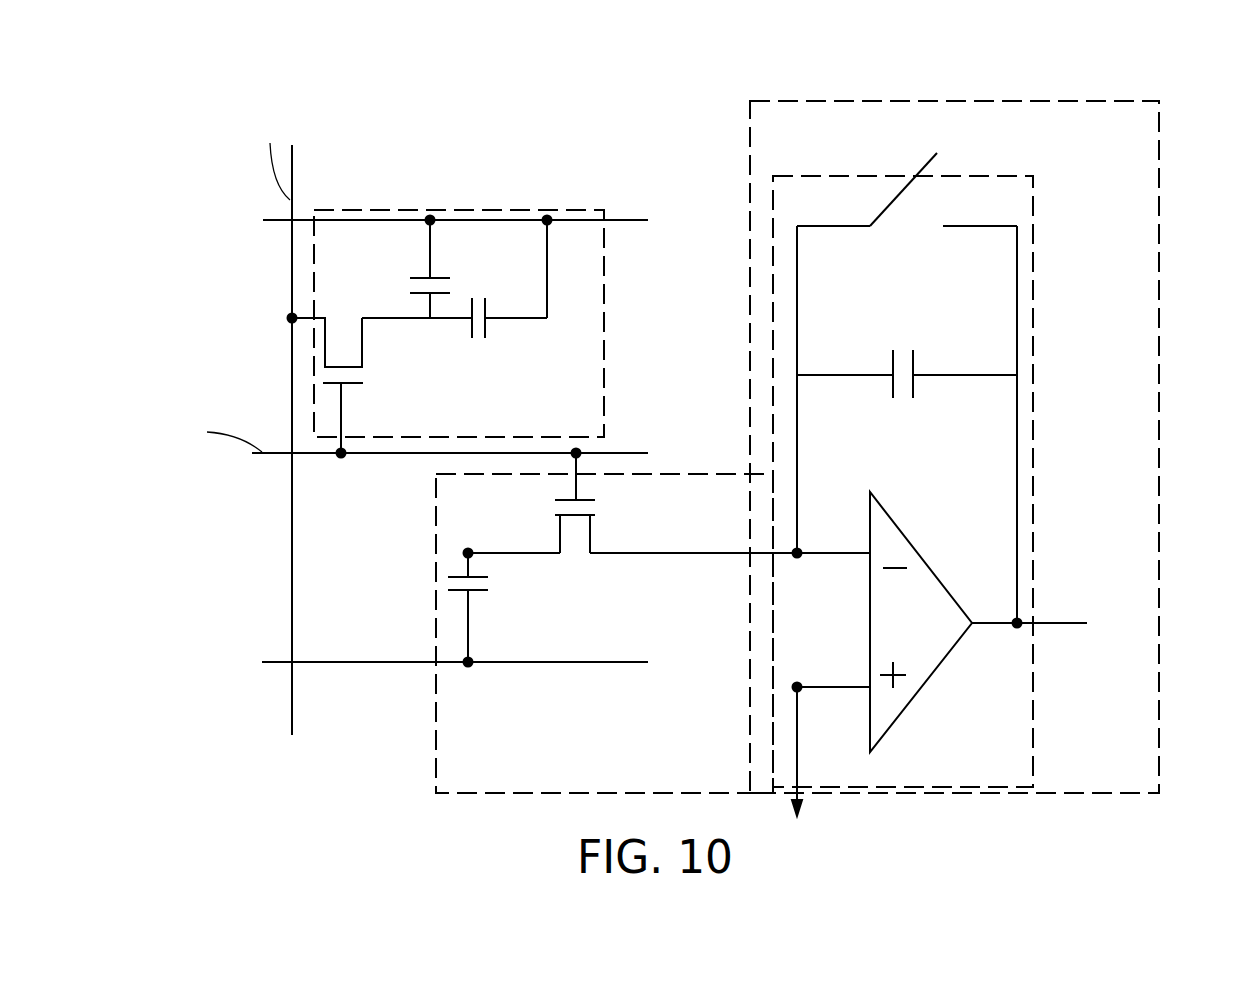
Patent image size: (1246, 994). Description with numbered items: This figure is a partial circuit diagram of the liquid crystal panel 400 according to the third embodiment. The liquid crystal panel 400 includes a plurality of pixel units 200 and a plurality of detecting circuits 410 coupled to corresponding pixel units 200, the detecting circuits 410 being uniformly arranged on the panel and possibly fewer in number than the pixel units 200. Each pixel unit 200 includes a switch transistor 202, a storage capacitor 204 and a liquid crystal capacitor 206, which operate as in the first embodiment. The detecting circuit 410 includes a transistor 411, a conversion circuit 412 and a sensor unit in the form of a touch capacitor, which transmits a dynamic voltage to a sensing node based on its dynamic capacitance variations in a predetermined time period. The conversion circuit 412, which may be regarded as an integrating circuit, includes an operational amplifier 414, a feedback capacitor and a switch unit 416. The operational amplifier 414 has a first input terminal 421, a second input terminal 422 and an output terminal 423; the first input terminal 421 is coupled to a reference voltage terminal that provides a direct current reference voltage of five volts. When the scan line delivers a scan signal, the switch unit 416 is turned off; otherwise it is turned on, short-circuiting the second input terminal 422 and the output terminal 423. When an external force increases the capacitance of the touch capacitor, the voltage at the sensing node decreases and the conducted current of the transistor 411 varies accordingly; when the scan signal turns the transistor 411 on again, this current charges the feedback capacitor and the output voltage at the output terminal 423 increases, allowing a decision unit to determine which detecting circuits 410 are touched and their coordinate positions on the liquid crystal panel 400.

The liquid crystal panel 400 is at (567, 107).
The pixel unit 200 is at (604, 325).
The switch transistor 202 is at (325, 367).
The storage capacitor 204 is at (423, 277).
The liquid crystal capacitor 206 is at (488, 329).
The detecting circuit 410 is at (436, 755).
The transistor 411 is at (590, 533).
The conversion circuit 412 is at (1033, 274).
The operational amplifier 414 is at (920, 688).
The switch unit 416 is at (927, 160).
The first input terminal 421 is at (795, 688).
The second input terminal 422 is at (795, 551).
The output terminal 423 is at (1015, 628).